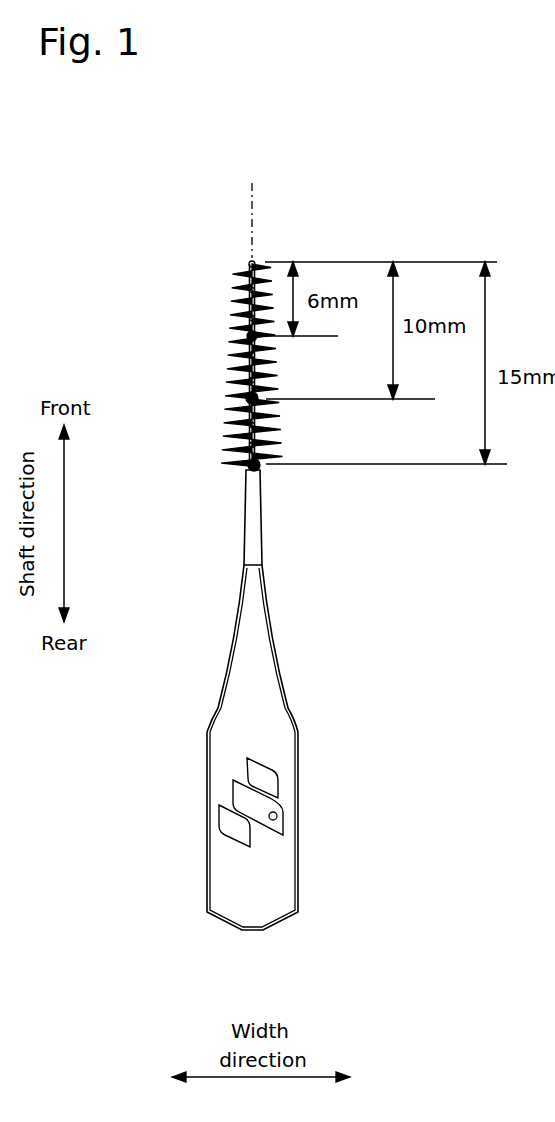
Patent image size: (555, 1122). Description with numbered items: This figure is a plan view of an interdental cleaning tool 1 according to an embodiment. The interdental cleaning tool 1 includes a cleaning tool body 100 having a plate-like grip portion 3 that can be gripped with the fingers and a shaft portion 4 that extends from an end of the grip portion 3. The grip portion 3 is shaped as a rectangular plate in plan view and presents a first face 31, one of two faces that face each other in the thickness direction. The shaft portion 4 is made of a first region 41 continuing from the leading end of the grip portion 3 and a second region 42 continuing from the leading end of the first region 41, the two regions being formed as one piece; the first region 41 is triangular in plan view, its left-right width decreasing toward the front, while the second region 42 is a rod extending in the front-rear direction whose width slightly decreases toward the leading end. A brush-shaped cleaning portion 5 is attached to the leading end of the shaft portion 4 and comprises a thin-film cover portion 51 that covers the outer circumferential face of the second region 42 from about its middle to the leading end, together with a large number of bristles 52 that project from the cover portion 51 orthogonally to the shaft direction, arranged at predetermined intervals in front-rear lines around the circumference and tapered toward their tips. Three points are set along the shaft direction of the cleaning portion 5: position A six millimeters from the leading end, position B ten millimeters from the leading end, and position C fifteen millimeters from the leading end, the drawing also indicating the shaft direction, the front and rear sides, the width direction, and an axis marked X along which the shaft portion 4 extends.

The interdental cleaning tool 1 is at (172, 248).
The cleaning tool body 100 is at (185, 747).
The grip portion 3 is at (323, 867).
The first face 31 is at (260, 753).
The shaft portion 4 is at (380, 503).
The first region 41 is at (254, 652).
The second region 42 is at (254, 538).
The cleaning portion 5 is at (198, 333).
The cover portion 51 is at (236, 358).
The bristles 52 is at (236, 418).
The position A is at (246, 334).
The position B is at (258, 396).
The position C is at (256, 471).
The central axis X is at (252, 206).